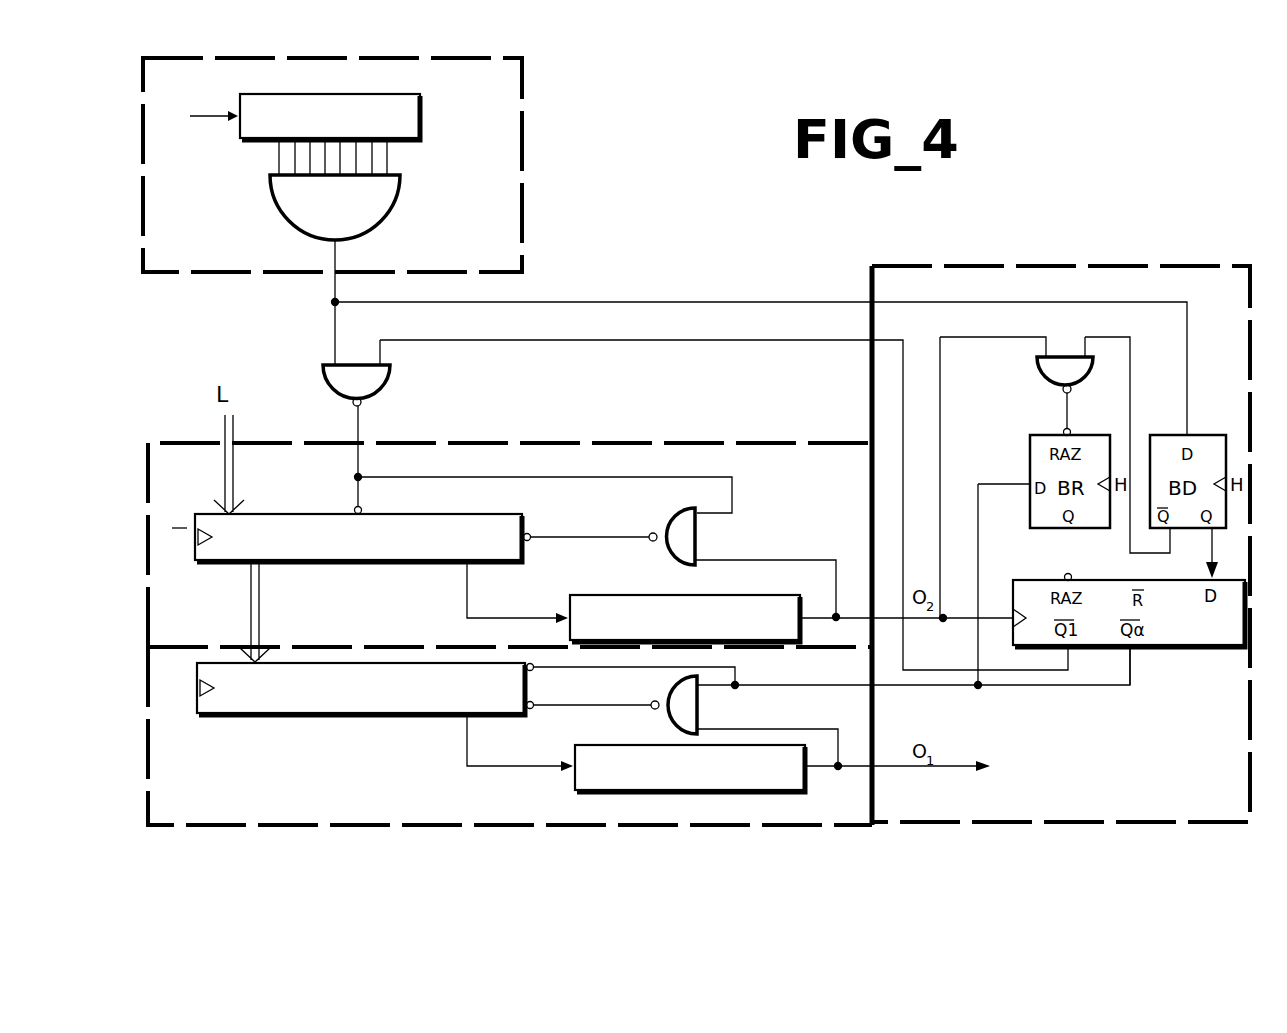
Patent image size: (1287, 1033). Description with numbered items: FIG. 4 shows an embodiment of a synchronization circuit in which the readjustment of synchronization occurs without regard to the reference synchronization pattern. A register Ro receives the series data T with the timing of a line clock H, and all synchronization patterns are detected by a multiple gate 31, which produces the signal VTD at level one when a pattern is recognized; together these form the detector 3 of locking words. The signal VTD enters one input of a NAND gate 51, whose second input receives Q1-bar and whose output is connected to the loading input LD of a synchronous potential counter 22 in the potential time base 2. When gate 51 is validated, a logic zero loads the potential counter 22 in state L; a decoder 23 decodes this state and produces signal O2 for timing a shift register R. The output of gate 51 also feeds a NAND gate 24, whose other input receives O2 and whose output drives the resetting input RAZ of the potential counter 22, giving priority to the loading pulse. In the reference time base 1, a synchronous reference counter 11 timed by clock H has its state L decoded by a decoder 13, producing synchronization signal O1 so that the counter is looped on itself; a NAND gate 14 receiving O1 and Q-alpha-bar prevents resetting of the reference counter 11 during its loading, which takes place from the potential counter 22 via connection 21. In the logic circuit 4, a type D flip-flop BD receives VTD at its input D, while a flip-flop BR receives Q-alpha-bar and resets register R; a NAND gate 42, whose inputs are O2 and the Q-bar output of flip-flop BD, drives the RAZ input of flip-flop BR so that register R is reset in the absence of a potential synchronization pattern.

The reference time base 1 is at (148, 700).
The potential time base 2 is at (678, 440).
The detector of locking words 3 is at (528, 92).
The logic circuit 4 is at (1226, 266).
The synchronous reference counter 11 is at (216, 716).
The decoder 13 is at (612, 792).
The NAND gate 14 is at (662, 722).
The connection 21 is at (266, 626).
The synchronous potential counter 22 is at (216, 564).
The decoder 23 is at (610, 595).
The NAND gate 24 is at (660, 512).
The multiple gate 31 is at (270, 212).
The NAND gate 42 is at (1037, 378).
The NAND gate 51 is at (323, 384).